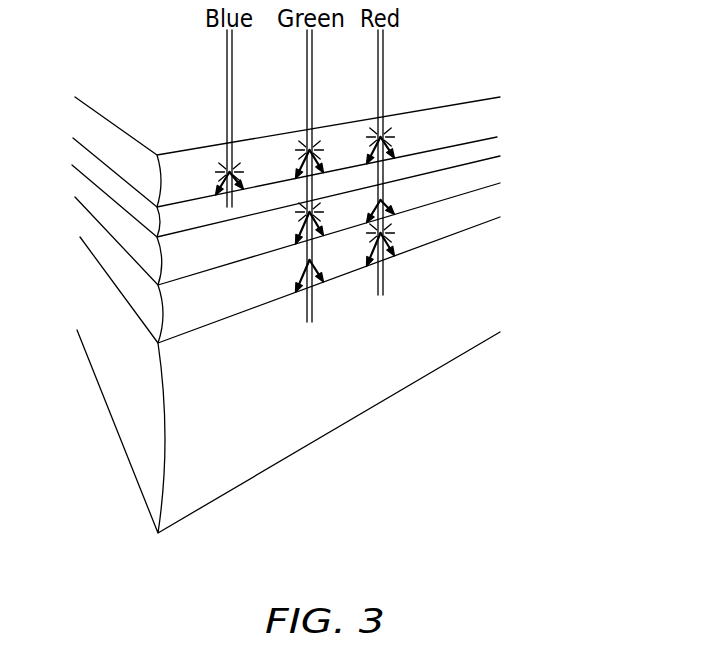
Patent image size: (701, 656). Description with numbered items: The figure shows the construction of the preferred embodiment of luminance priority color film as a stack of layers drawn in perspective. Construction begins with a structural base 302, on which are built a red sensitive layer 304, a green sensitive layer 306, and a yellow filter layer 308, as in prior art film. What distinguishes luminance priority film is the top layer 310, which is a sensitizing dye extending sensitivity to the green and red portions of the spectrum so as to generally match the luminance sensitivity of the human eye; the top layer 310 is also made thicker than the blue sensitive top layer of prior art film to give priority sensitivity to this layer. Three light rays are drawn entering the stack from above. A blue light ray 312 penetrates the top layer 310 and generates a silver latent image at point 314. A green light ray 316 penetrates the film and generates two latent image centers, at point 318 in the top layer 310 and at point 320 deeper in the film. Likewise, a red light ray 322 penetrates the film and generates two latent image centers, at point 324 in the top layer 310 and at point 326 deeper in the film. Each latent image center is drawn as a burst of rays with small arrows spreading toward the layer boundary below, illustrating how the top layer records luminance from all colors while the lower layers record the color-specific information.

The structural base 302 is at (325, 375).
The red sensitive layer 304 is at (324, 261).
The green sensitive layer 306 is at (322, 215).
The yellow filter layer 308 is at (322, 177).
The top layer 310 is at (324, 145).
The blue light ray 312 is at (259, 118).
The point 314 is at (196, 150).
The green light ray 316 is at (339, 176).
The point 318 is at (283, 139).
The point 320 is at (271, 229).
The red light ray 322 is at (416, 162).
The point 324 is at (414, 119).
The point 326 is at (414, 237).